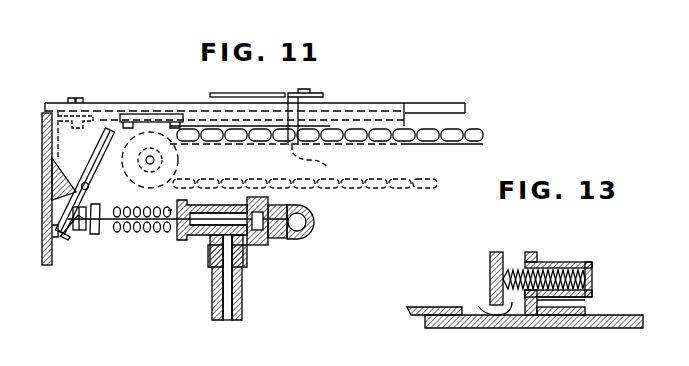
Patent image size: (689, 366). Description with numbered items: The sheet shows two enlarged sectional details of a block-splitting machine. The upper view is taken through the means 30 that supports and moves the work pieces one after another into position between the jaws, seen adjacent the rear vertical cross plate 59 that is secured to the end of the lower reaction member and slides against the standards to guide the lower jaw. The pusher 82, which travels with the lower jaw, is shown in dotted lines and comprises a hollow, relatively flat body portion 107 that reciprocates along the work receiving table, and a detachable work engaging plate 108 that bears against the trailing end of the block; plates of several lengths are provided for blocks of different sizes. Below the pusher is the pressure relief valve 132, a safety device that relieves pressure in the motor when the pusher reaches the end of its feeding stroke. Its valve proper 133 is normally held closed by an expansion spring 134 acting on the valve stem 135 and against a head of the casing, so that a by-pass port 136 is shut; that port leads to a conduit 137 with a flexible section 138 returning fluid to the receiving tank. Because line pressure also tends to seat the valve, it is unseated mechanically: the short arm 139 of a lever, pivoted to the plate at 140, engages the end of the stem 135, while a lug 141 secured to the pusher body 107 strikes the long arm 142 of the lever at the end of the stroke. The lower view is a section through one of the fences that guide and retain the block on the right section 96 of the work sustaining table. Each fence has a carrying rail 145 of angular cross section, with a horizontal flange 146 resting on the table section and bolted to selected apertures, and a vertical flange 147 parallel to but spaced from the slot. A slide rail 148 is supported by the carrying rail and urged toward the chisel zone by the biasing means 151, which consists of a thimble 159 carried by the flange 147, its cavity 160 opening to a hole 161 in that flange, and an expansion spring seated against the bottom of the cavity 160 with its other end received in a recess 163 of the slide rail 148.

In FIG. 11, the means to support and move the work pieces 30 is at (341, 87).
In FIG. 11, the rear vertical cross plate 59 is at (47, 266).
In FIG. 11, the pusher 82 is at (410, 96).
In FIG. 13, the right section of the work sustaining table 96 is at (643, 325).
In FIG. 11, the body portion 107 is at (352, 96).
In FIG. 11, the work engaging plate 108 is at (220, 92).
In FIG. 11, the pressure relief valve 132 is at (258, 245).
In FIG. 11, the valve proper 133 is at (242, 208).
In FIG. 11, the expansion spring 134 is at (140, 235).
In FIG. 11, the stem 135 is at (160, 233).
In FIG. 11, the by-pass port 136 is at (215, 207).
In FIG. 11, the conduit 137 is at (213, 258).
In FIG. 11, the flexible section 138 is at (242, 295).
In FIG. 11, the short arm 139 is at (65, 238).
In FIG. 11, the pivot 140 is at (89, 188).
In FIG. 11, the lug 141 is at (324, 158).
In FIG. 11, the long arm 142 is at (110, 125).
In FIG. 13, the carrying rail 145 is at (527, 253).
In FIG. 13, the flange 146 is at (583, 316).
In FIG. 13, the flange 147 is at (537, 262).
In FIG. 13, the slide rail 148 is at (489, 259).
In FIG. 13, the means for yieldably biasing the slide rail 151 is at (592, 273).
In FIG. 13, the thimble 159 is at (557, 267).
In FIG. 13, the cavity 160 is at (592, 288).
In FIG. 13, the hole 161 is at (520, 260).
In FIG. 13, the recess 163 is at (476, 300).